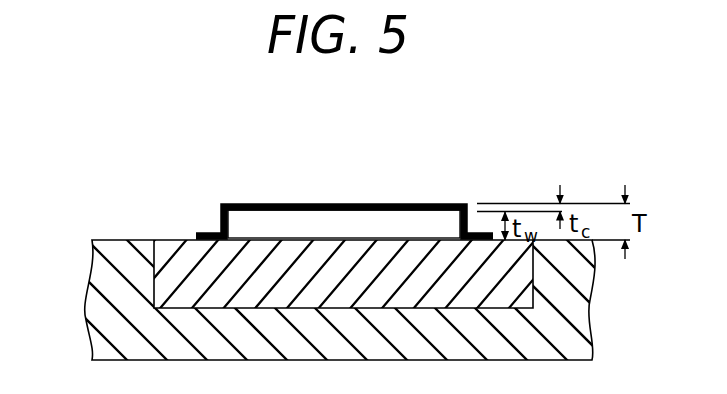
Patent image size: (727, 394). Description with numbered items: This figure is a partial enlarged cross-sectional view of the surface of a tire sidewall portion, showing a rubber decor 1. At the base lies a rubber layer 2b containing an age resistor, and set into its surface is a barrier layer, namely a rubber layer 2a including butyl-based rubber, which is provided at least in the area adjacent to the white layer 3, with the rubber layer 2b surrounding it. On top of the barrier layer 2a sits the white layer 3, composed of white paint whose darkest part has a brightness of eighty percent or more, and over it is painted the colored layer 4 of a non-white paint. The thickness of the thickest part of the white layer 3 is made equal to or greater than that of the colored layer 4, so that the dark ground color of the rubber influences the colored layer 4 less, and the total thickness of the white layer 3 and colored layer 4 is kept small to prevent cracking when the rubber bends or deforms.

The rubber decor 1 is at (107, 215).
The rubber layer 2a is at (171, 250).
The rubber layer 2b is at (107, 283).
The white layer 3 is at (270, 222).
The colored layer 4 is at (315, 203).